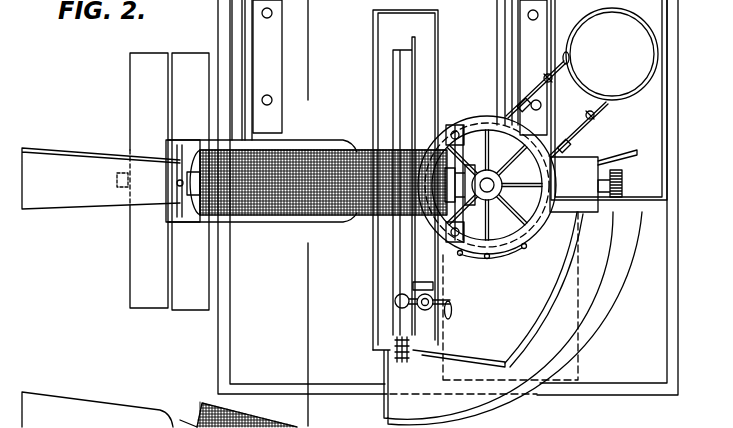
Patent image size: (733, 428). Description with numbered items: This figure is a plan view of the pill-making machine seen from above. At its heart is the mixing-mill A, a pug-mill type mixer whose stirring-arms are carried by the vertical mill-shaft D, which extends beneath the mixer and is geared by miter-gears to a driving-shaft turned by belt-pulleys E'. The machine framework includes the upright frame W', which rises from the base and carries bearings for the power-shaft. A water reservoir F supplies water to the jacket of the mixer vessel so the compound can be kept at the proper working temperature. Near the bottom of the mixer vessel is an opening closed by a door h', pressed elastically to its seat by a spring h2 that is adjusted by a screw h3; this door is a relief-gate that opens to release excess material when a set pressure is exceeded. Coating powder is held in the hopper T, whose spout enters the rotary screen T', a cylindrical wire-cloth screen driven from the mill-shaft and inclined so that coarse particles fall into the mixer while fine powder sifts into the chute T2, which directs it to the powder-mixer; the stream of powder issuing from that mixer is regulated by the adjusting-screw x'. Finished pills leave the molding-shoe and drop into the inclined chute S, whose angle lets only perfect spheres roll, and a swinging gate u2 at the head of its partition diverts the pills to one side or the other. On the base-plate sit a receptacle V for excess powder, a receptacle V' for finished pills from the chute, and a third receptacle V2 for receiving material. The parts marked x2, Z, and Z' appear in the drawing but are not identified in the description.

The hopper T is at (109, 288).
The rotary screen T' is at (317, 270).
The chute T2 is at (332, 143).
The belt-pulleys E' is at (169, 181).
The upright frame W' is at (257, 70).
The receptacle V is at (405, 186).
The receptacle V' is at (609, 100).
The third receptacle V2 is at (510, 296).
The reservoir F is at (610, 54).
The mill-shaft D is at (488, 184).
The mixing-mill A is at (487, 187).
The adjusting-screw x' is at (536, 89).
The operating lever x2 is at (578, 129).
The door h' is at (517, 258).
The spring h2 is at (487, 258).
The screw h3 is at (462, 256).
The valve handle Z is at (439, 290).
The valve Z' is at (423, 310).
The chute S is at (544, 289).
The swinging gate u2 is at (459, 356).